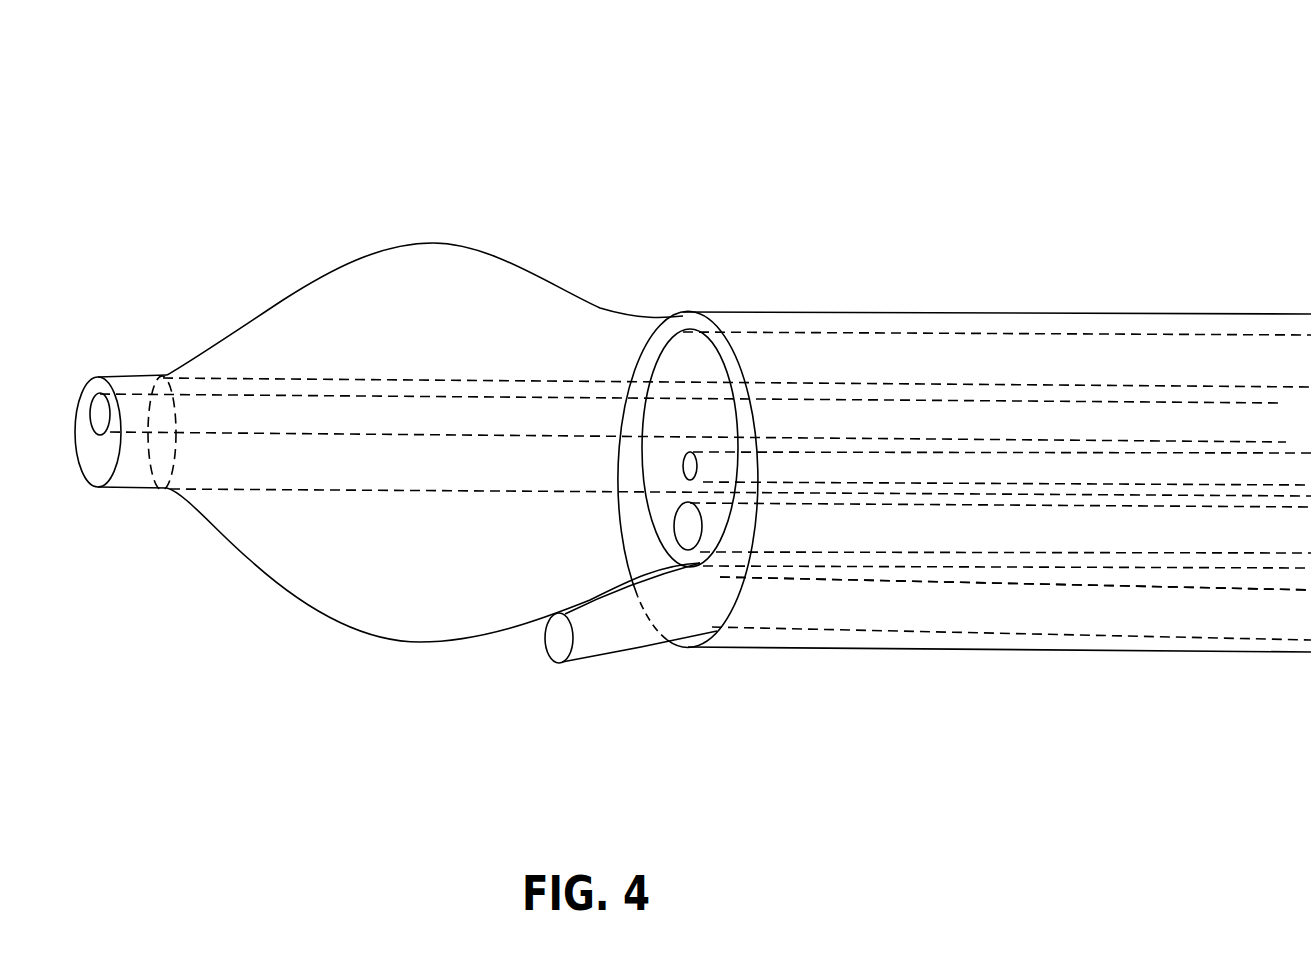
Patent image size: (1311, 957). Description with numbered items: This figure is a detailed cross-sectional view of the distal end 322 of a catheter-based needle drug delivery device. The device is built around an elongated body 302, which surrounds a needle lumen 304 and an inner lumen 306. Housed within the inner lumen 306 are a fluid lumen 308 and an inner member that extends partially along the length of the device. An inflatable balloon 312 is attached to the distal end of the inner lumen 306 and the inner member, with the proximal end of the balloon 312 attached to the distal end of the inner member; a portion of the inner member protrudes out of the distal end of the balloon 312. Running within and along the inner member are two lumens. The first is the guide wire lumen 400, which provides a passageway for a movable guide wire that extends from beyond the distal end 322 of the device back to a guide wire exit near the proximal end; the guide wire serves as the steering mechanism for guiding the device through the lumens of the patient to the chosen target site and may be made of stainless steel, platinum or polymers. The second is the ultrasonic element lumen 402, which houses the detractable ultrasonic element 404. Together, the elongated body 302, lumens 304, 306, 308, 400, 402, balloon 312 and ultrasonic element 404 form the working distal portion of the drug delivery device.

The elongated body 302 is at (862, 322).
The needle lumen 304 is at (633, 633).
The inner lumen 306 is at (722, 341).
The fluid lumen 308 is at (838, 528).
The inflatable balloon 312 is at (490, 267).
The distal end 322 is at (633, 128).
The guide wire lumen 400 is at (218, 395).
The ultrasonic element lumen 402 is at (683, 470).
The ultrasonic element 404 is at (712, 465).